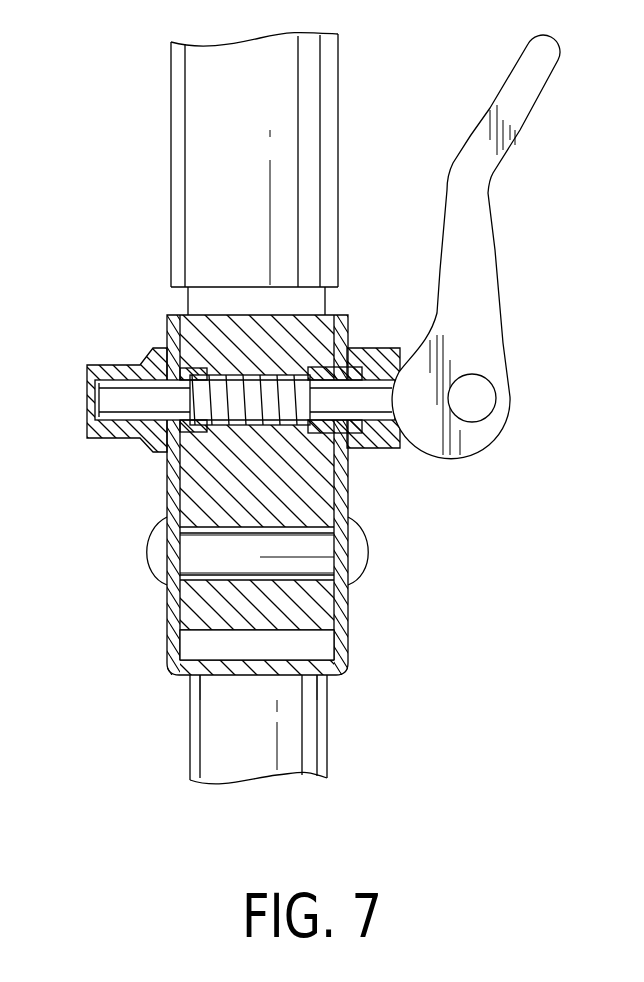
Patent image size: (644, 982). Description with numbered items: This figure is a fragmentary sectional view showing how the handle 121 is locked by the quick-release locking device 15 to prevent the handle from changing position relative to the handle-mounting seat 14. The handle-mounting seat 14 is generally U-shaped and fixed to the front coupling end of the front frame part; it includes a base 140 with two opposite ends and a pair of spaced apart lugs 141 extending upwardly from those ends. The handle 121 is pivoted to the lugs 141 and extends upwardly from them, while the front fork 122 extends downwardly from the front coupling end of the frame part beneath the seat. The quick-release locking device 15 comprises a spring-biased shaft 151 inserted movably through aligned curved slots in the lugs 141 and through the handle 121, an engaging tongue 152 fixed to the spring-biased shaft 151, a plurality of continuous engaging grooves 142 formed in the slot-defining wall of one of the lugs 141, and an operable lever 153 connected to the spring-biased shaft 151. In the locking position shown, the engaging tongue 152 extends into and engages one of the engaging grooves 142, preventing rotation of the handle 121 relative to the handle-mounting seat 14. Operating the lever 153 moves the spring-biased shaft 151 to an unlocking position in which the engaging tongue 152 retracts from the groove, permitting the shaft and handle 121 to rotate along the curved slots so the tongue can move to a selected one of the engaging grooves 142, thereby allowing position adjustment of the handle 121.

The handle-mounting seat 14 is at (348, 618).
The quick-release locking device 15 is at (490, 276).
The handle 121 is at (183, 190).
The front fork 122 is at (308, 737).
The base 140 is at (237, 680).
The lugs 141 is at (165, 622).
The engaging grooves 142 is at (343, 457).
The spring-biased shaft 151 is at (237, 410).
The engaging tongue 152 is at (326, 368).
The operable lever 153 is at (485, 292).